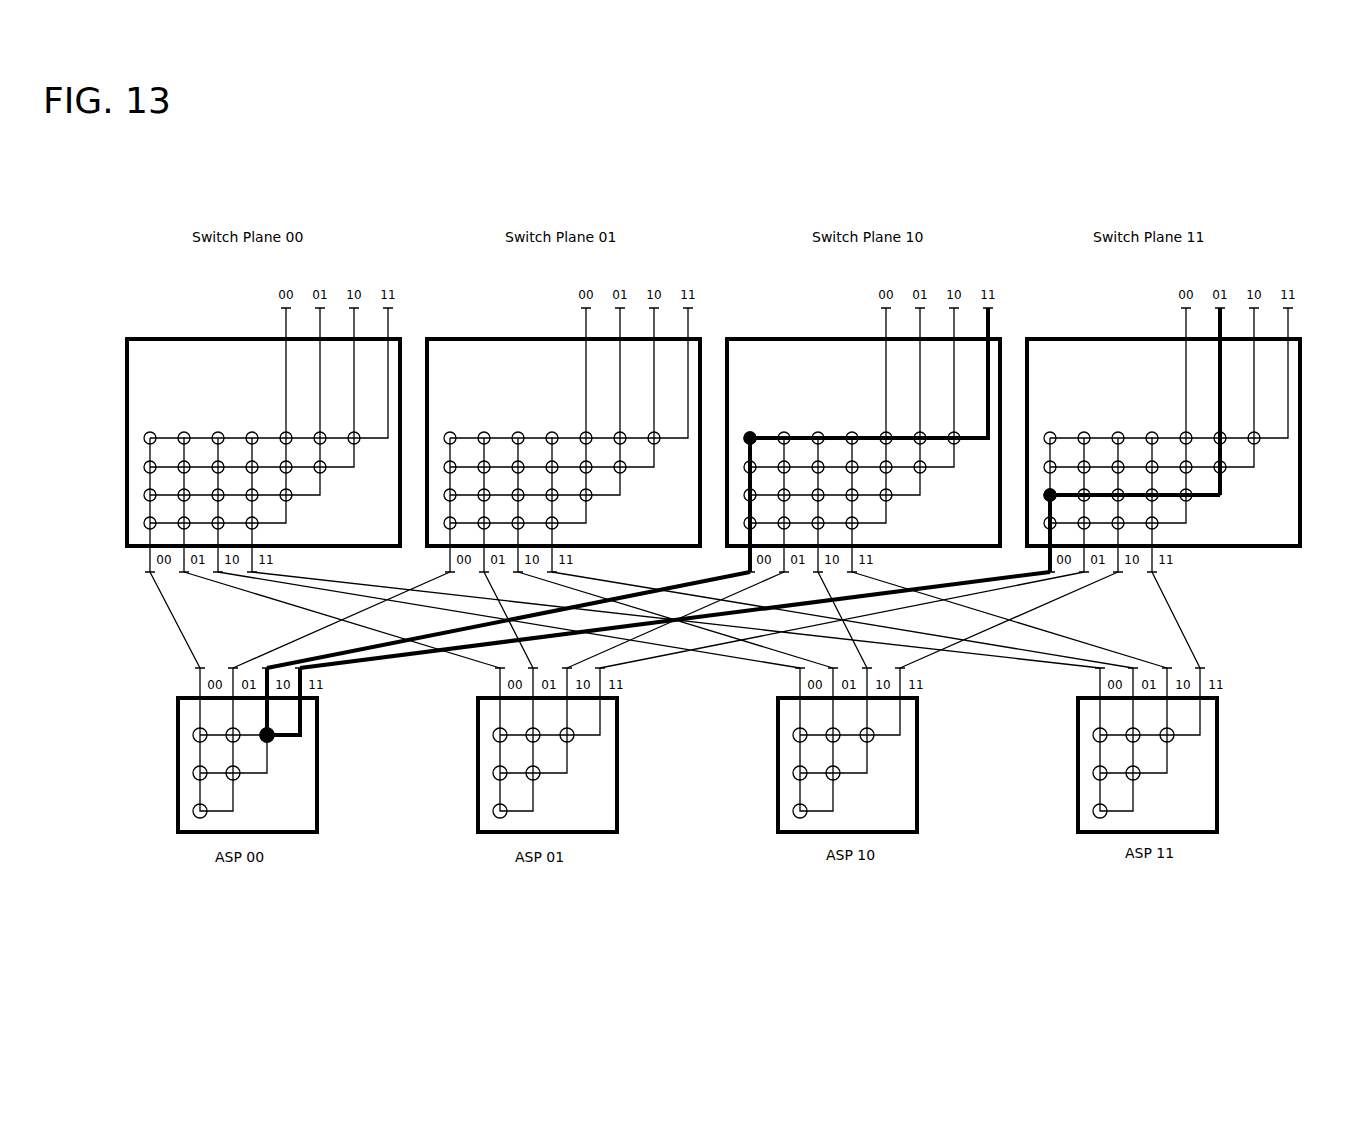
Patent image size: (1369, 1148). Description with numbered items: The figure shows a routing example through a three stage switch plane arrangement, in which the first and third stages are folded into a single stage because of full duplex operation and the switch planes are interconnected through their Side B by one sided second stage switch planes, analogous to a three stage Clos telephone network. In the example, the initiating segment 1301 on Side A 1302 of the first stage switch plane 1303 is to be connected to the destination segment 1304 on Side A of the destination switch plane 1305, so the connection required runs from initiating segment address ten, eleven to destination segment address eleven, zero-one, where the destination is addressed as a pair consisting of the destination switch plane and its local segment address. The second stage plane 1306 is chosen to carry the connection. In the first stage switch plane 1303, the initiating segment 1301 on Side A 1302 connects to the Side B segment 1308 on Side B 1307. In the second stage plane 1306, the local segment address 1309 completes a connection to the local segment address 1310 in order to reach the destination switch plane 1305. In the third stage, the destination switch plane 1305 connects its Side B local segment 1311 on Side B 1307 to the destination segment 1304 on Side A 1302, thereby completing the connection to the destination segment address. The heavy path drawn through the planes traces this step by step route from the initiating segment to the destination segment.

The segment 11 on Side A of SP 10 1301 is at (988, 305).
The Side A 1302 is at (98, 302).
The first stage switch plane SP 10 1303 is at (795, 338).
The segment 01 on Side A of SP 11 1304 is at (1220, 306).
The switch plane SP 11 (destination switch plane DSP) 1305 is at (1205, 546).
The ASP 00 (second stage switch plane SP 00) 1306 is at (300, 832).
The Side B 1307 is at (92, 585).
The segment 00 on Side B of SP 10 1308 is at (750, 573).
The LSA 10 of ASP 00 1309 is at (270, 669).
The LSA 11 of ASP 00 1310 is at (303, 670).
The LSA 00 on Side B of SP 11 1311 is at (1054, 572).